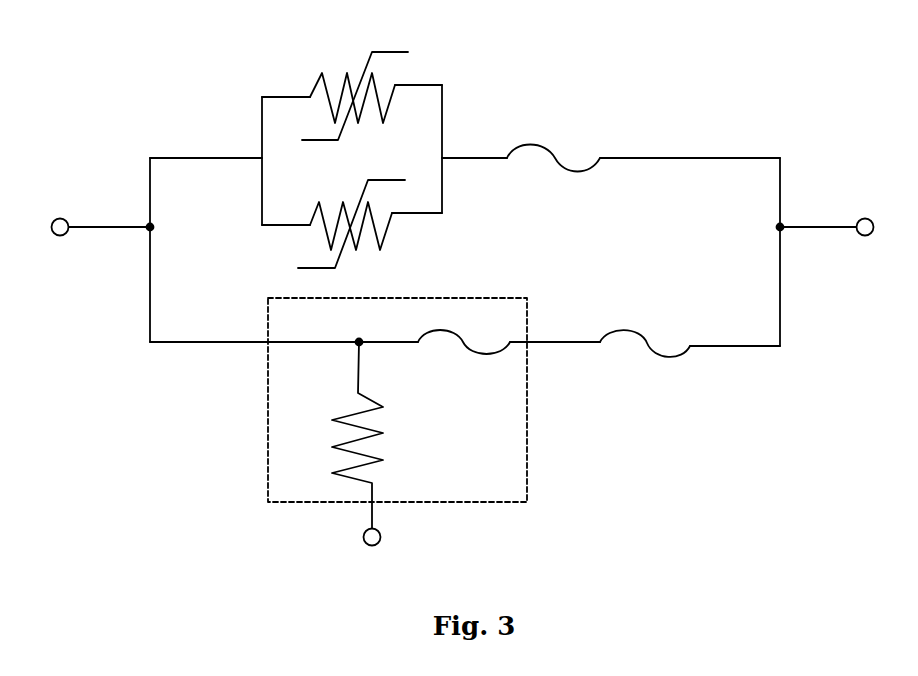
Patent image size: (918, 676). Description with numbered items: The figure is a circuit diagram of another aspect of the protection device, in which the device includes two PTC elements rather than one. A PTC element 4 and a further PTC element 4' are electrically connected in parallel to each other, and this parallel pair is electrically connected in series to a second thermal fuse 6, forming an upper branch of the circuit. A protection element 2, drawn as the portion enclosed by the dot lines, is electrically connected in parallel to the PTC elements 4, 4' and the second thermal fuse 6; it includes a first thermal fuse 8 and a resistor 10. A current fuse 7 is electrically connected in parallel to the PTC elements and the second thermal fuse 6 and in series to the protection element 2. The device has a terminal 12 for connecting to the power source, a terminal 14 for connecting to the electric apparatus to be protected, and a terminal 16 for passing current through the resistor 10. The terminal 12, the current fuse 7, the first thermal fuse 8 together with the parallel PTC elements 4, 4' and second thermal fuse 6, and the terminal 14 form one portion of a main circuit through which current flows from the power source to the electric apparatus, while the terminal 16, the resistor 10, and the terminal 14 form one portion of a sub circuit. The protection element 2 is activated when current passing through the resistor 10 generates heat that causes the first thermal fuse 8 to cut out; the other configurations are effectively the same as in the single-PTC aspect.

The protection element 2 is at (413, 403).
The PTC element 4 is at (355, 81).
The PTC element 4' is at (351, 234).
The second thermal fuse 6 is at (553, 137).
The current fuse 7 is at (645, 365).
The first thermal fuse 8 is at (464, 359).
The resistor 10 is at (378, 435).
The terminal 12 is at (844, 227).
The terminal 14 is at (83, 227).
The terminal 16 is at (372, 554).